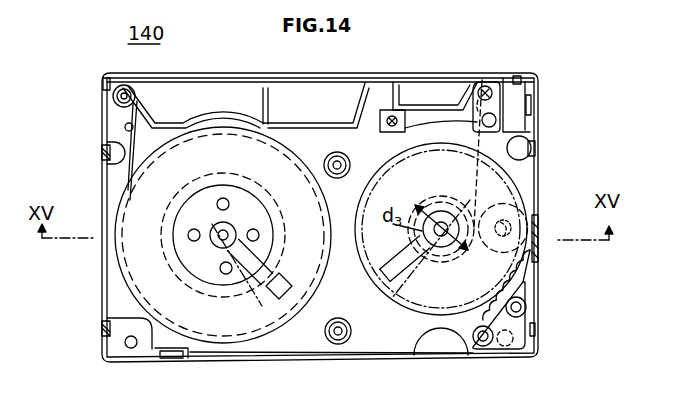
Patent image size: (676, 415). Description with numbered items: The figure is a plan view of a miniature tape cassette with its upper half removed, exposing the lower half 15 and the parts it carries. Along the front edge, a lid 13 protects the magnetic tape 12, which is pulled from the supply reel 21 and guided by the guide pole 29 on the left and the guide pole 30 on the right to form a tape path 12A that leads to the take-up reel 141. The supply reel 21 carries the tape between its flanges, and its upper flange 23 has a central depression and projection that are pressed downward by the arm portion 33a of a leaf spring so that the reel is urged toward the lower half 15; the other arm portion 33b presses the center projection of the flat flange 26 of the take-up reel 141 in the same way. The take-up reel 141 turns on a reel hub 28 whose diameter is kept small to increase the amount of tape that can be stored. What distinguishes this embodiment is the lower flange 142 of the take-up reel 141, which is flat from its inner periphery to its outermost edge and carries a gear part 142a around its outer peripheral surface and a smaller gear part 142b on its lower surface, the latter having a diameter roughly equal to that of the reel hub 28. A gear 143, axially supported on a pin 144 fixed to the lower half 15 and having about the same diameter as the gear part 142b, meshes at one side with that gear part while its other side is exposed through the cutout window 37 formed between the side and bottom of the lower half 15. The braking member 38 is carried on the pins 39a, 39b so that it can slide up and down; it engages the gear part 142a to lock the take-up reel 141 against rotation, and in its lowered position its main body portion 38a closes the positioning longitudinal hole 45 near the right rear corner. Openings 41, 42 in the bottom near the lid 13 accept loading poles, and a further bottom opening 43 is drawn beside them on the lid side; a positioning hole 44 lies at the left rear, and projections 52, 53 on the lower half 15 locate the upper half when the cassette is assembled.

The lid 13 is at (214, 72).
The magnetic tape 12 is at (127, 132).
The tape path 12A is at (246, 82).
The guide pole 29 is at (118, 85).
The opening 41 is at (185, 92).
The opening 42 is at (307, 90).
The tape guide block 43 is at (425, 88).
The guide pole 30 is at (490, 74).
The supply reel 21 is at (120, 273).
The upper flange 23 is at (125, 214).
The arm portion 33a is at (252, 274).
The take-up reel 141 is at (522, 178).
The reel hub 28 is at (440, 210).
The gear part 142b is at (439, 243).
The pin 144 is at (445, 243).
The arm portion 33b is at (402, 300).
The lower flange 142 is at (446, 330).
The gear part 142a is at (523, 272).
The flange 26 is at (416, 346).
The braking member 38 is at (527, 342).
The main body portion 38a is at (521, 283).
The cutout window 37 is at (532, 252).
The pin 39a is at (527, 308).
The pin 39b is at (482, 347).
The positioning longitudinal hole 45 is at (512, 348).
The gear 143 is at (537, 226).
The projection 52 is at (346, 162).
The projection 53 is at (340, 322).
The positioning hole 44 is at (131, 349).
The lower half 15 is at (296, 350).